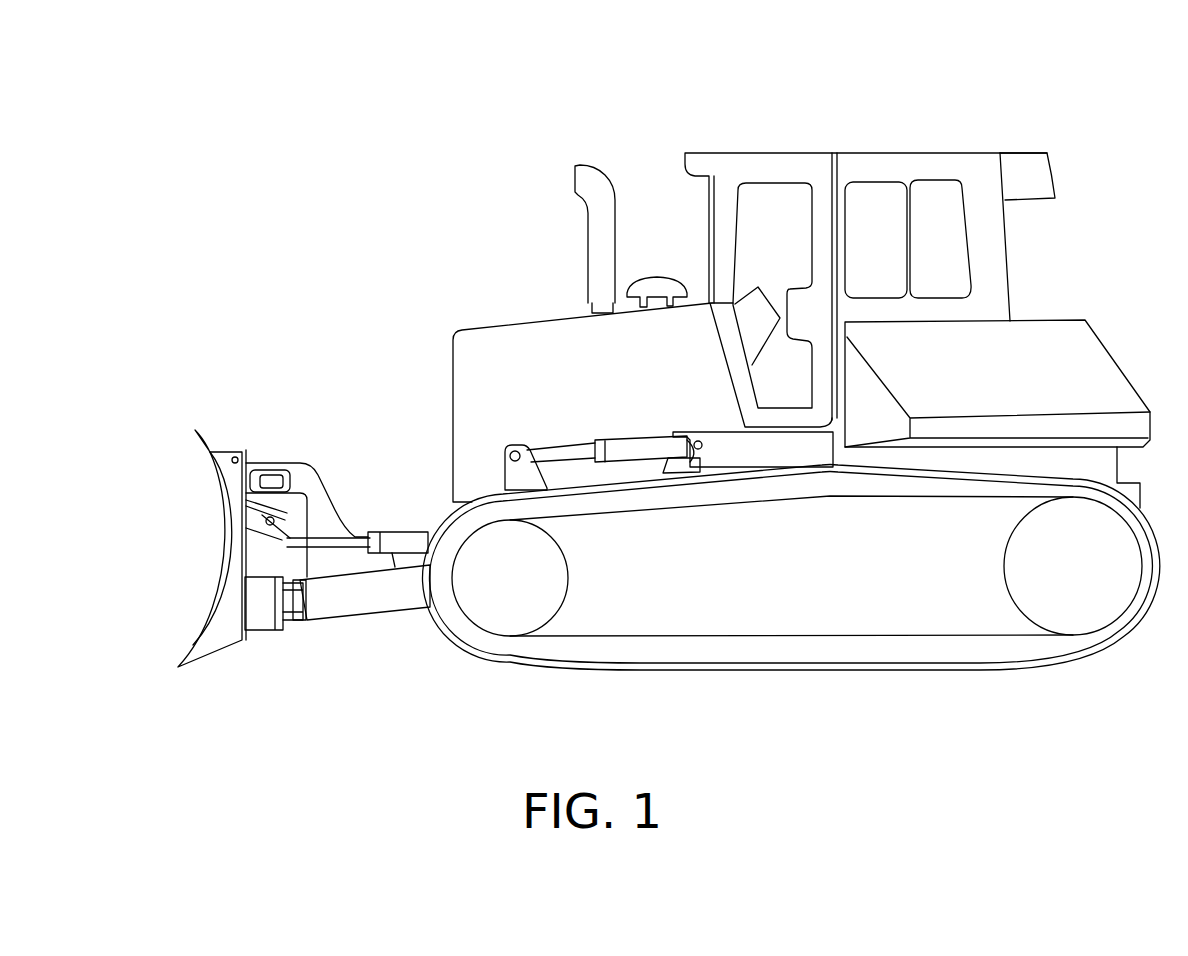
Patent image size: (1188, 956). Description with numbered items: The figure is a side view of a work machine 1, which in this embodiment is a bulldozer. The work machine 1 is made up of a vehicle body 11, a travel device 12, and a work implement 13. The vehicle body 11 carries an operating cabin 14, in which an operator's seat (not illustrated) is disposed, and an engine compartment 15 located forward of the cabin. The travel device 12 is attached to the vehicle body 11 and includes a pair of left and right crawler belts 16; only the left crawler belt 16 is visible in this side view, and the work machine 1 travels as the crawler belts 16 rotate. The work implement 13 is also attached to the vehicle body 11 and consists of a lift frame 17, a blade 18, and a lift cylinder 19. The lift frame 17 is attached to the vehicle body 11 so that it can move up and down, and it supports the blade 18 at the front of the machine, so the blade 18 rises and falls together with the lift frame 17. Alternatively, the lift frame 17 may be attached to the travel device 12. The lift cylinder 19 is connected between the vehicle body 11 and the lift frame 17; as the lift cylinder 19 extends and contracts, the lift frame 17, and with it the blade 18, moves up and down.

The work machine 1 is at (257, 133).
The vehicle body 11 is at (540, 235).
The travel device 12 is at (1047, 672).
The work implement 13 is at (318, 408).
The operating cabin 14 is at (728, 165).
The engine compartment 15 is at (655, 342).
The crawler belt 16 is at (923, 671).
The lift frame 17 is at (383, 600).
The blade 18 is at (230, 498).
The lift cylinder 19 is at (632, 440).